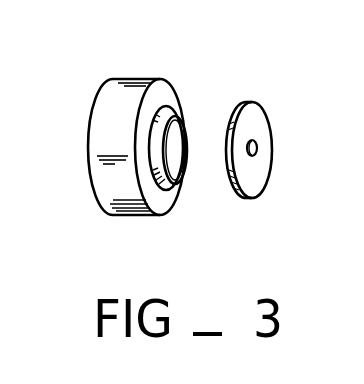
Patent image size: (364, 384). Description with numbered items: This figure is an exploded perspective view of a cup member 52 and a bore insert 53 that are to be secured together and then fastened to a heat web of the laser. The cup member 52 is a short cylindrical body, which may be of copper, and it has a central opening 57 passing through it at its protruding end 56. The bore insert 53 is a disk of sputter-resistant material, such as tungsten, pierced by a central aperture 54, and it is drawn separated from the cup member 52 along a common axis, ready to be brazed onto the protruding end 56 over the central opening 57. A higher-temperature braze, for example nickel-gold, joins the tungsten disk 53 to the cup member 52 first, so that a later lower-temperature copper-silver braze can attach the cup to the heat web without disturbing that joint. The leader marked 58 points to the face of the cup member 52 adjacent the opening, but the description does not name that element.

The cup member 52 is at (148, 80).
The bore insert 53 is at (257, 106).
The central aperture 54 is at (258, 150).
The protruding end 56 is at (150, 163).
The central opening 57 is at (184, 132).
The bearing ring 58 is at (165, 198).